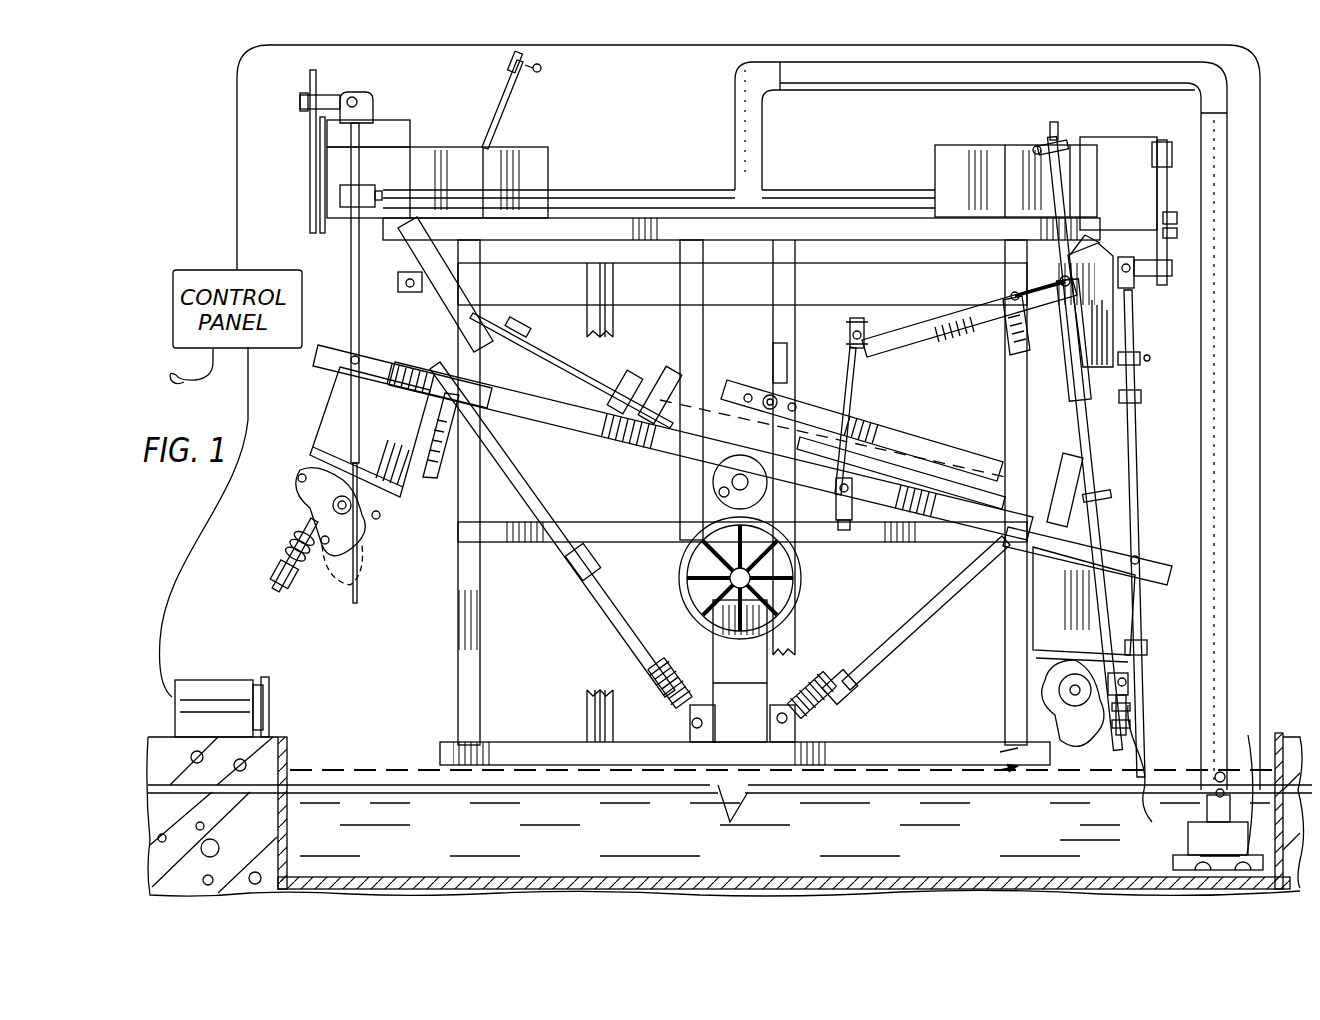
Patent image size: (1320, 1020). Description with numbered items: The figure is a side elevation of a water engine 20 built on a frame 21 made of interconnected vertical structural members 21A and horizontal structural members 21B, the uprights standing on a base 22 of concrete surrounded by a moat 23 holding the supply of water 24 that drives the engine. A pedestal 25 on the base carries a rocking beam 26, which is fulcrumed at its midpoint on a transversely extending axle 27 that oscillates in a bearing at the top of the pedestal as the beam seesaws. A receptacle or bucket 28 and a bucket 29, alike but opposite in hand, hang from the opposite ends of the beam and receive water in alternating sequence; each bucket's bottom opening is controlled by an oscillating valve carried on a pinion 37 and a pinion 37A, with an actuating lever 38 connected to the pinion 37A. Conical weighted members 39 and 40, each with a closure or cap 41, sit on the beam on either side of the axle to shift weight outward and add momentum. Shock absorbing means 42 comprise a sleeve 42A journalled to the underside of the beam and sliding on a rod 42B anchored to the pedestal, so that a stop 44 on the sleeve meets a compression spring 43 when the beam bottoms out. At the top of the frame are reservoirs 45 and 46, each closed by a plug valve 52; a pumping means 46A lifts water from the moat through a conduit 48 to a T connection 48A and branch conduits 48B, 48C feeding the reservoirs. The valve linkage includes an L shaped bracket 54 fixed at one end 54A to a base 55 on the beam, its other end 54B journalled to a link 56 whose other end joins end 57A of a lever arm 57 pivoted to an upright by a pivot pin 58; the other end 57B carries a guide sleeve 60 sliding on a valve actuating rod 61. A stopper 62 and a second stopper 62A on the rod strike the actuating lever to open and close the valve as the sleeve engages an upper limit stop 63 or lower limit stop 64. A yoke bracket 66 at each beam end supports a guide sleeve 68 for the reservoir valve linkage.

The water engine 20 is at (440, 633).
The frame 21 is at (740, 492).
The vertical structural members 21A is at (776, 330).
The horizontal structural members 21B is at (776, 402).
The base 22 is at (537, 742).
The moat 23 is at (290, 753).
The water 24 is at (403, 770).
The pedestal 25 is at (768, 676).
The rocking beam 26 is at (586, 430).
The axle 27 is at (725, 486).
The receptacle or bucket 28 is at (328, 418).
The receptacle or bucket 29 is at (1131, 596).
The pinion 37 is at (333, 505).
The pinion 37A is at (1079, 690).
The actuating lever 38 is at (1132, 708).
The weighted member 39 is at (514, 354).
The weighted member 40 is at (888, 455).
The closure or cap 41 is at (531, 322).
The shock absorbing means 42 is at (720, 552).
The sleeve 42A is at (566, 549).
The rod 42B is at (646, 646).
The compression spring 43 is at (672, 712).
The stop 44 is at (582, 582).
The reservoir 45 is at (437, 130).
The reservoir 46 is at (1066, 134).
The pumping means 46A is at (1176, 839).
The conduit 48 is at (1220, 540).
The T connection 48A is at (765, 162).
The branch conduit 48B is at (626, 197).
The branch conduit 48C is at (890, 193).
The plug valve 52 is at (386, 125).
The L shaped bracket 54 is at (790, 396).
The end of L shaped bracket 54A is at (756, 372).
The end of L shaped bracket 54B is at (868, 536).
The base 55 is at (760, 392).
The link 56 is at (860, 396).
The lever arm 57 is at (936, 312).
The end of lever arm 57A is at (850, 326).
The end of lever arm 57B is at (1096, 238).
The pivot pin 58 is at (952, 298).
The guide sleeve 60 is at (1076, 341).
The valve actuating rod 61 is at (514, 124).
The stopper 62 is at (1190, 780).
The second stopper 62A is at (1130, 683).
The upper limit stop 63 is at (541, 72).
The lower limit stop 64 is at (1104, 497).
The yoke bracket 66 is at (336, 350).
The guide sleeve 68 is at (350, 272).